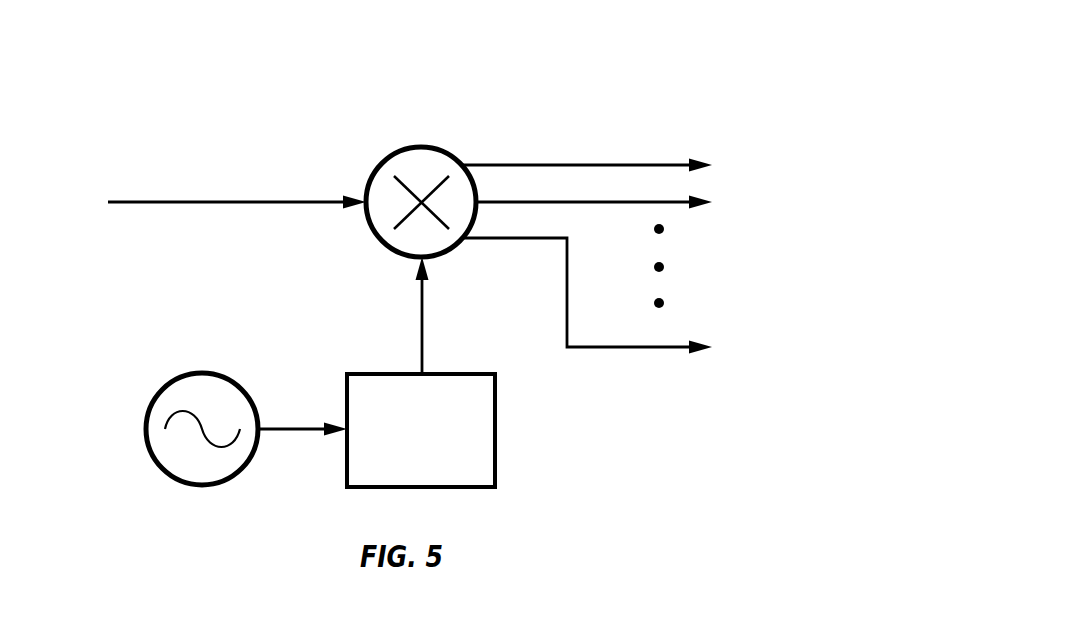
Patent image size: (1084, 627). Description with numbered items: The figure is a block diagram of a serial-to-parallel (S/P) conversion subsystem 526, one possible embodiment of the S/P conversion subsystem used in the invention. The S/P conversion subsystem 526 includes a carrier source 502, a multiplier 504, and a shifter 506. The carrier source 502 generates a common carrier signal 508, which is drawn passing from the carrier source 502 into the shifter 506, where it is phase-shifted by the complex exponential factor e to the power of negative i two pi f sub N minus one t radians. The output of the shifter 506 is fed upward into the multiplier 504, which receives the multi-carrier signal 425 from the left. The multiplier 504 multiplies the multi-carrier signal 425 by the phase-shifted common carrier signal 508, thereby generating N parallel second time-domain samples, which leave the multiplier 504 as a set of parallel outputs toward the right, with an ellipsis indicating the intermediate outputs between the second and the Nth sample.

The multiplier 504 is at (420, 147).
The multi-carrier signal 425 is at (219, 200).
The S/P conversion subsystem 526 is at (840, 75).
The carrier source 502 is at (201, 373).
The common carrier signal 508 is at (312, 427).
The shifter 506 is at (440, 460).